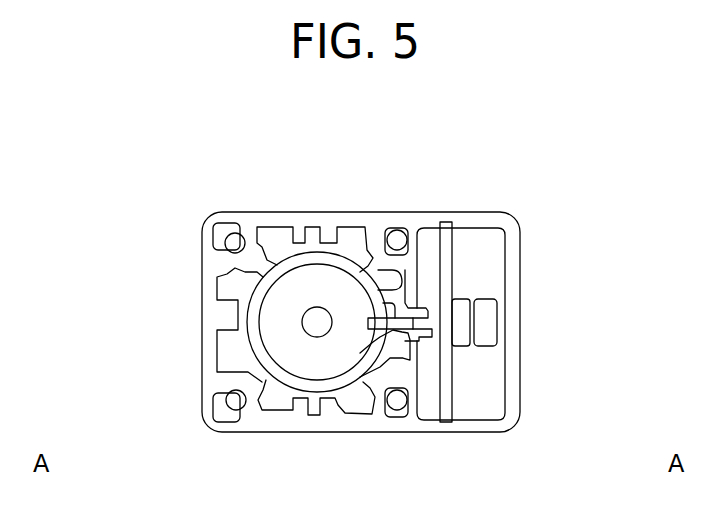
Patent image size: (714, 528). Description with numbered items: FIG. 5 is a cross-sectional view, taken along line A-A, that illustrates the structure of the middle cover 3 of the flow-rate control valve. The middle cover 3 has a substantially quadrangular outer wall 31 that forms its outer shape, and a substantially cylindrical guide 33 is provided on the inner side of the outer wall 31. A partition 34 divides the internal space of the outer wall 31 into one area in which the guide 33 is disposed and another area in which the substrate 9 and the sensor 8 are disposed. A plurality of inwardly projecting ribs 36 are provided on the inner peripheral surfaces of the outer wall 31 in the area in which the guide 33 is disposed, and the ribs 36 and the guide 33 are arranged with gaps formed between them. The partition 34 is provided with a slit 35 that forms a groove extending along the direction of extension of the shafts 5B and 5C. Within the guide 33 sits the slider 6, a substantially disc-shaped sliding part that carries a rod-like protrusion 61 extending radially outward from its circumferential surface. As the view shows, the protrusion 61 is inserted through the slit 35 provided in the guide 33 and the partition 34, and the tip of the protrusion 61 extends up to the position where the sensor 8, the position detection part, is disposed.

The middle cover 3 is at (166, 180).
The outer wall 31 is at (312, 213).
The protrusion 61 is at (382, 297).
The substrate 9 is at (448, 245).
The shaft 5B is at (202, 290).
The shaft 5C is at (303, 322).
The guide 33 is at (248, 322).
The slider 6 is at (273, 338).
The slit 35 is at (405, 310).
The sensor 8 is at (433, 333).
The partition 34 is at (410, 377).
The ribs 36 is at (333, 403).